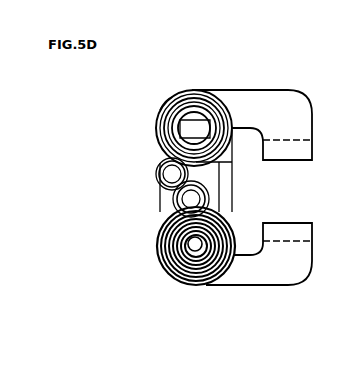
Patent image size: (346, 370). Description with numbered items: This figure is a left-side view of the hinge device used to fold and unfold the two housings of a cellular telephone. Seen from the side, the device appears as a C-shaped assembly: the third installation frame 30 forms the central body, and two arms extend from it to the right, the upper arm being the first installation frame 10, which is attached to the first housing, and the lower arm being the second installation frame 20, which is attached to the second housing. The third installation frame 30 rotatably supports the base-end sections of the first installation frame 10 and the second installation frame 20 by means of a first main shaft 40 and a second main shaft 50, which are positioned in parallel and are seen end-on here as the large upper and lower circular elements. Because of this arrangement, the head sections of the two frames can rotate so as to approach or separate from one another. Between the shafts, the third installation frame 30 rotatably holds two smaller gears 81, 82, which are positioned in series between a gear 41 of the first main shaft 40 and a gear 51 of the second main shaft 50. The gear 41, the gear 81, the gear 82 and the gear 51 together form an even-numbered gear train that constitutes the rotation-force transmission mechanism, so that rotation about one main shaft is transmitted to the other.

The first installation frame 10 is at (272, 105).
The second installation frame 20 is at (277, 268).
The third installation frame 30 is at (162, 193).
The first main shaft 40 is at (174, 97).
The gear 41 is at (182, 128).
The second main shaft 50 is at (172, 274).
The gear 51 is at (160, 233).
The gear 81 is at (158, 165).
The gear 82 is at (173, 200).